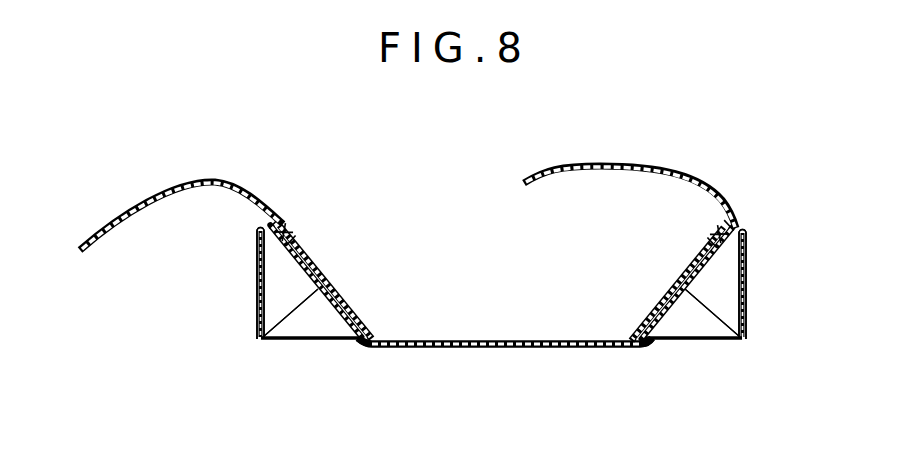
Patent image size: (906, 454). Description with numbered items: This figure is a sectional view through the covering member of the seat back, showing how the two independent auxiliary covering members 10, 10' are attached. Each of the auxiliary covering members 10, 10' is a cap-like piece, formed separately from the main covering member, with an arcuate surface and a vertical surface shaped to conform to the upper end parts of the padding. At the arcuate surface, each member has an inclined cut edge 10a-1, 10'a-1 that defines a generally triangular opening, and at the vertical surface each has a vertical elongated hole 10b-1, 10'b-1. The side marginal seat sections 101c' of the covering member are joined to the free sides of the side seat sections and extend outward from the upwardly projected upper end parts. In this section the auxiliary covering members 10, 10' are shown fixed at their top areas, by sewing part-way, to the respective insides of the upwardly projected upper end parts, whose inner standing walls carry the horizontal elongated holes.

The auxiliary covering member 10 is at (586, 288).
The auxiliary covering member 10' is at (411, 286).
The inclined cut edge 10a-1 is at (687, 297).
The inclined cut edge 10'a-1 is at (311, 334).
The vertical elongated hole 10b-1 is at (747, 287).
The vertical elongated hole 10'b-1 is at (225, 284).
The side marginal seat section 101c' is at (408, 196).